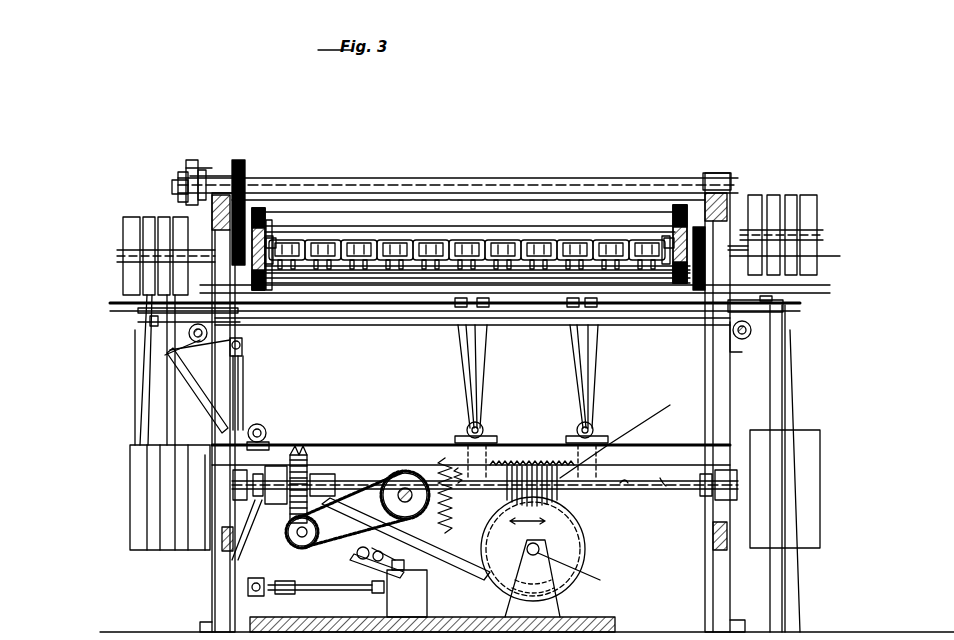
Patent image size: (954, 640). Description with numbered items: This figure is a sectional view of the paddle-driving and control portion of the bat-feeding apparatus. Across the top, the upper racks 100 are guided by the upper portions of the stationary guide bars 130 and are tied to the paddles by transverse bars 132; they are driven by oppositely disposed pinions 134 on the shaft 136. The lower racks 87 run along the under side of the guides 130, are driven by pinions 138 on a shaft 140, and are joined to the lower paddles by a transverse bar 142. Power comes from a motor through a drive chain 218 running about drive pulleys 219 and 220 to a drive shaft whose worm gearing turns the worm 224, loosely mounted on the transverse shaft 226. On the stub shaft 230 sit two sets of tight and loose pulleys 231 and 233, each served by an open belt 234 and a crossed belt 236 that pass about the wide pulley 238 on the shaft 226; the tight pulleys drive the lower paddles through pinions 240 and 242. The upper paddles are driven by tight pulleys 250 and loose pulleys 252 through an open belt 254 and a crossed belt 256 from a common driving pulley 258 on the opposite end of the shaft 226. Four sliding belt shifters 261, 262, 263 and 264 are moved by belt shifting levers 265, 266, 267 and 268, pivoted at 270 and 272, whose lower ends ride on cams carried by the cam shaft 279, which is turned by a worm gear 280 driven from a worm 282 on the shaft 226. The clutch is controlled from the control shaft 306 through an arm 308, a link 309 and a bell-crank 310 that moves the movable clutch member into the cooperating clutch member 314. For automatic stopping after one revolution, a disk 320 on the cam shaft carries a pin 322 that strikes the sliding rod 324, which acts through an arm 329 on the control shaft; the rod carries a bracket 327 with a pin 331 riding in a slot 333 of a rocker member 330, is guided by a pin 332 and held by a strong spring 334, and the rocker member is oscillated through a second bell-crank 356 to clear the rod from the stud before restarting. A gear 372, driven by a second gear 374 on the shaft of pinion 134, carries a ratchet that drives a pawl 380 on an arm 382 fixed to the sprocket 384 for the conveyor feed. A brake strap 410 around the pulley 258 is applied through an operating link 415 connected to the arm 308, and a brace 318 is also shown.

The lower racks 87 is at (271, 264).
The upper racks 100 is at (282, 225).
The stationary guide bars 130 is at (277, 237).
The transverse bars 132 is at (437, 225).
The pinions 134 is at (265, 208).
The shaft 136 is at (540, 219).
The pinions 138 is at (266, 289).
The shaft 140 is at (525, 280).
The transverse bar 142 is at (455, 272).
The drive chain 218 is at (377, 466).
The drive pulley 219 is at (421, 470).
The drive pulley 220 is at (302, 532).
The worm 224 is at (308, 455).
The transverse shaft 226 is at (677, 486).
The stub shaft 230 is at (826, 232).
The tight and loose pulleys 231 is at (775, 195).
The tight and loose pulleys 233 is at (807, 195).
The open belt 234 is at (791, 318).
The crossed belt 236 is at (791, 363).
The wide pulley 238 is at (817, 479).
The pinion 240 is at (749, 247).
The pinion 242 is at (810, 286).
The tight pulleys 250 is at (175, 216).
The loose pulleys 252 is at (165, 218).
The open belt 254 is at (165, 402).
The crossed belt 256 is at (147, 397).
The driving pulley 258 is at (134, 486).
The sliding belt shifter 261 is at (136, 309).
The sliding belt shifter 262 is at (138, 320).
The sliding belt shifter 263 is at (877, 282).
The sliding belt shifter 264 is at (834, 293).
The belt shifting lever 265 is at (476, 350).
The belt shifting lever 266 is at (474, 367).
The belt shifting lever 267 is at (550, 337).
The belt shifting lever 268 is at (592, 362).
The pivot 270 is at (484, 428).
The pivot 272 is at (592, 428).
The cam shaft 279 is at (538, 548).
The worm gear 280 is at (588, 570).
The worm 282 is at (620, 460).
The control shaft 306 is at (242, 347).
The arm 308 is at (247, 358).
The link 309 is at (244, 385).
The bell-crank 310 is at (260, 430).
The clutch member 314 is at (306, 453).
The brace 318 is at (242, 560).
The disk 320 is at (554, 585).
The pin 322 is at (485, 583).
The sliding rod 324 is at (462, 550).
The bracket 327 is at (407, 588).
The arm 329 is at (207, 336).
The rocker member 330 is at (347, 590).
The pin 331 is at (381, 560).
The pin 332 is at (434, 460).
The slot 333 is at (364, 560).
The spring 334 is at (492, 461).
The bell-crank 356 is at (279, 575).
The gear 372 is at (243, 164).
The gear 374 is at (260, 209).
The pawl 380 is at (183, 177).
The arm 382 is at (208, 156).
The sprocket 384 is at (215, 177).
The brake strap 410 is at (205, 550).
The operating link 415 is at (138, 413).